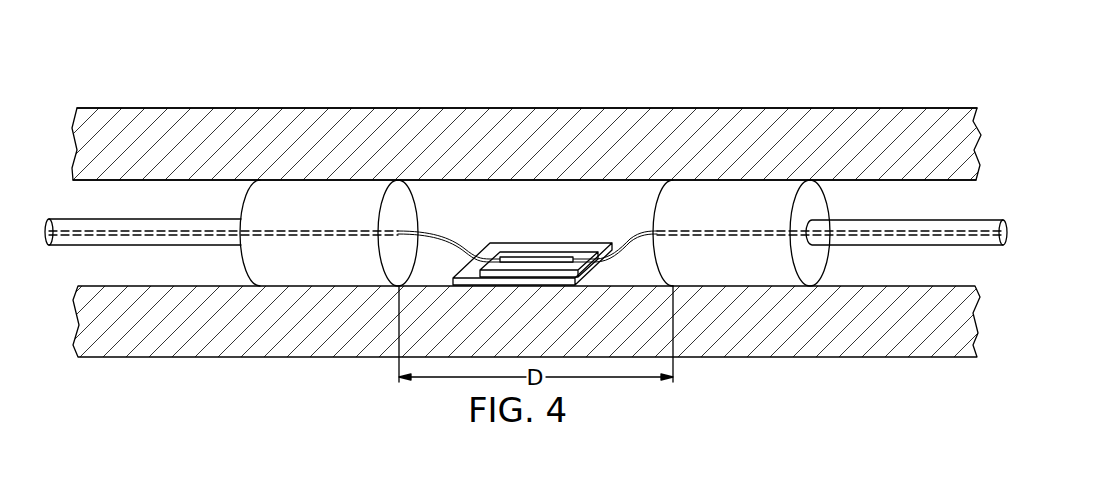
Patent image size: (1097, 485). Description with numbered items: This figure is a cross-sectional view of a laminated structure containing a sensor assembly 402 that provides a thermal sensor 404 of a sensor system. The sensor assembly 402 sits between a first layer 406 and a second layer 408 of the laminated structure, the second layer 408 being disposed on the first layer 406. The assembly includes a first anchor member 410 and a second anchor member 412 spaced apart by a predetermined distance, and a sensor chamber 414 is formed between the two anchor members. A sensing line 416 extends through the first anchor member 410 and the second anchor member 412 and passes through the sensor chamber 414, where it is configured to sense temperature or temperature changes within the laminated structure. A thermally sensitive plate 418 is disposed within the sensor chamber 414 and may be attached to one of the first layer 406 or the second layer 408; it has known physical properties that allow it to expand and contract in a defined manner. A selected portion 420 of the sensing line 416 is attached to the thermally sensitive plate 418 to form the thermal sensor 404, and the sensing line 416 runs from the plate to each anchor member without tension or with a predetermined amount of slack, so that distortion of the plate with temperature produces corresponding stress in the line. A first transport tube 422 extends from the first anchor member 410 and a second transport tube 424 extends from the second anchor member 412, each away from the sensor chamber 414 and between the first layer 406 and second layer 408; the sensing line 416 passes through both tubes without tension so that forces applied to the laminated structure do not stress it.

The sensor assembly 402 is at (500, 108).
The thermal sensor 404 is at (590, 180).
The first layer 406 is at (977, 320).
The second layer 408 is at (977, 149).
The first anchor member 410 is at (242, 208).
The second anchor member 412 is at (652, 212).
The sensor chamber 414 is at (527, 212).
The sensing line 416 is at (68, 245).
The thermally sensitive plate 418 is at (585, 268).
The selected portion 420 is at (552, 255).
The first transport tube 422 is at (130, 219).
The second transport tube 424 is at (925, 219).